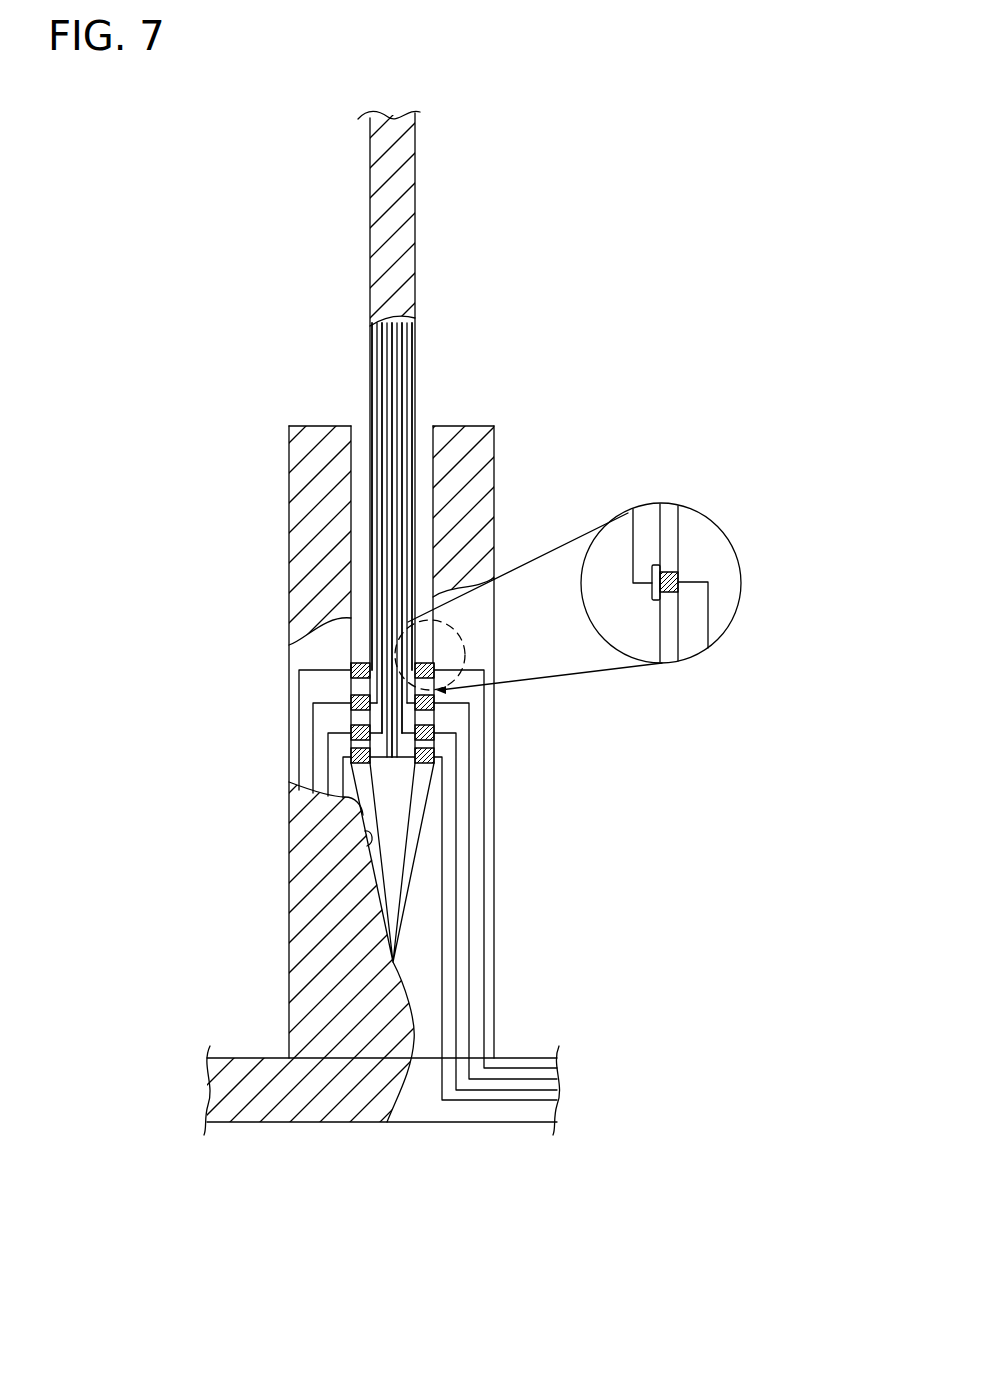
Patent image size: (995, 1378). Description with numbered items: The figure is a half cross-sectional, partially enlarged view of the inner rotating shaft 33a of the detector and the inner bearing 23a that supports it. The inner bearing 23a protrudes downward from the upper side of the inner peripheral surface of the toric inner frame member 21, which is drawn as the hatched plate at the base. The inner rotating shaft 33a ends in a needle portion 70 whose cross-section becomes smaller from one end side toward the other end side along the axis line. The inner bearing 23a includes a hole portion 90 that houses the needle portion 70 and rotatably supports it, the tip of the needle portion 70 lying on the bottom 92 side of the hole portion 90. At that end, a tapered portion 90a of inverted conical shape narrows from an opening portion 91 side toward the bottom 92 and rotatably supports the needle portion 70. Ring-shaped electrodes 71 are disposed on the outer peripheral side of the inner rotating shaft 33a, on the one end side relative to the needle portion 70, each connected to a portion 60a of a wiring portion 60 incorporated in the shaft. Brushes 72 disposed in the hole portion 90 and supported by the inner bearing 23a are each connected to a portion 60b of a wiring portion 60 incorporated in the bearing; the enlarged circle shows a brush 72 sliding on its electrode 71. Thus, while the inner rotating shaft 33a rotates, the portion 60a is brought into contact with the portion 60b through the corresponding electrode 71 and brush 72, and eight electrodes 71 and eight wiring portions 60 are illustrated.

The inner frame member 21 is at (250, 1122).
The inner bearing 23a is at (487, 455).
The inner rotating shaft 33a is at (418, 230).
The wiring portion 60 is at (410, 370).
The portion of the wiring portion 60a is at (630, 537).
The portion of the wiring portion 60b is at (714, 611).
The needle portion 70 is at (376, 869).
The electrode 71 is at (656, 602).
The brush 72 is at (667, 572).
The hole portion 90 is at (353, 548).
The tapered portion 90a is at (366, 838).
The opening portion 91 is at (425, 460).
The bottom 92 is at (397, 961).